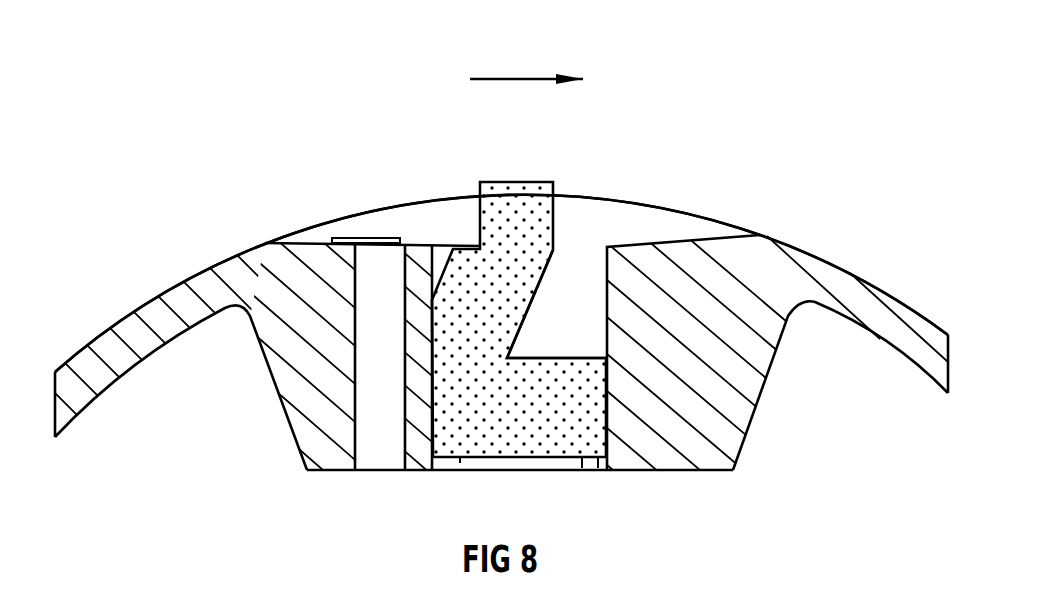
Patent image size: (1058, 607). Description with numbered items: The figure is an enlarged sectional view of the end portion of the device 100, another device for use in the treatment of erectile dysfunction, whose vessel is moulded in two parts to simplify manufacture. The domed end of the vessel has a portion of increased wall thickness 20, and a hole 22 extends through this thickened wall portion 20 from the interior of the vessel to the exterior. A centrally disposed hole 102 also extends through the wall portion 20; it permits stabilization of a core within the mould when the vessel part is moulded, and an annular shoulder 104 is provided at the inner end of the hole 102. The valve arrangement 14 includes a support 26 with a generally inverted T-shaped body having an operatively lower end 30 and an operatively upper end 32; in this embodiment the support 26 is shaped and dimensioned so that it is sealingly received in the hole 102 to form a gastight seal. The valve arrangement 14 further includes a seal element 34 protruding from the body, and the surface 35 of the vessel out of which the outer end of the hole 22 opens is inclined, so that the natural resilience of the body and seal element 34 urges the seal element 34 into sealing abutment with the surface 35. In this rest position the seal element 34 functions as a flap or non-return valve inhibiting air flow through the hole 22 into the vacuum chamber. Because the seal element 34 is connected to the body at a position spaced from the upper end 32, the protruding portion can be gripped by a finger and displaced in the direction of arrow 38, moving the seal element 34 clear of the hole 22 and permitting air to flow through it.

The valve arrangement 14 is at (639, 108).
The portion of increased wall thickness 20 is at (213, 437).
The hole 22 is at (392, 447).
The support 26 is at (563, 338).
The lower end 30 is at (565, 458).
The upper end 32 is at (518, 182).
The seal element 34 is at (352, 240).
The surface 35 is at (298, 237).
The arrow 38 is at (510, 78).
The device 100 is at (227, 162).
The centrally disposed hole 102 is at (575, 272).
The annular shoulder 104 is at (597, 463).